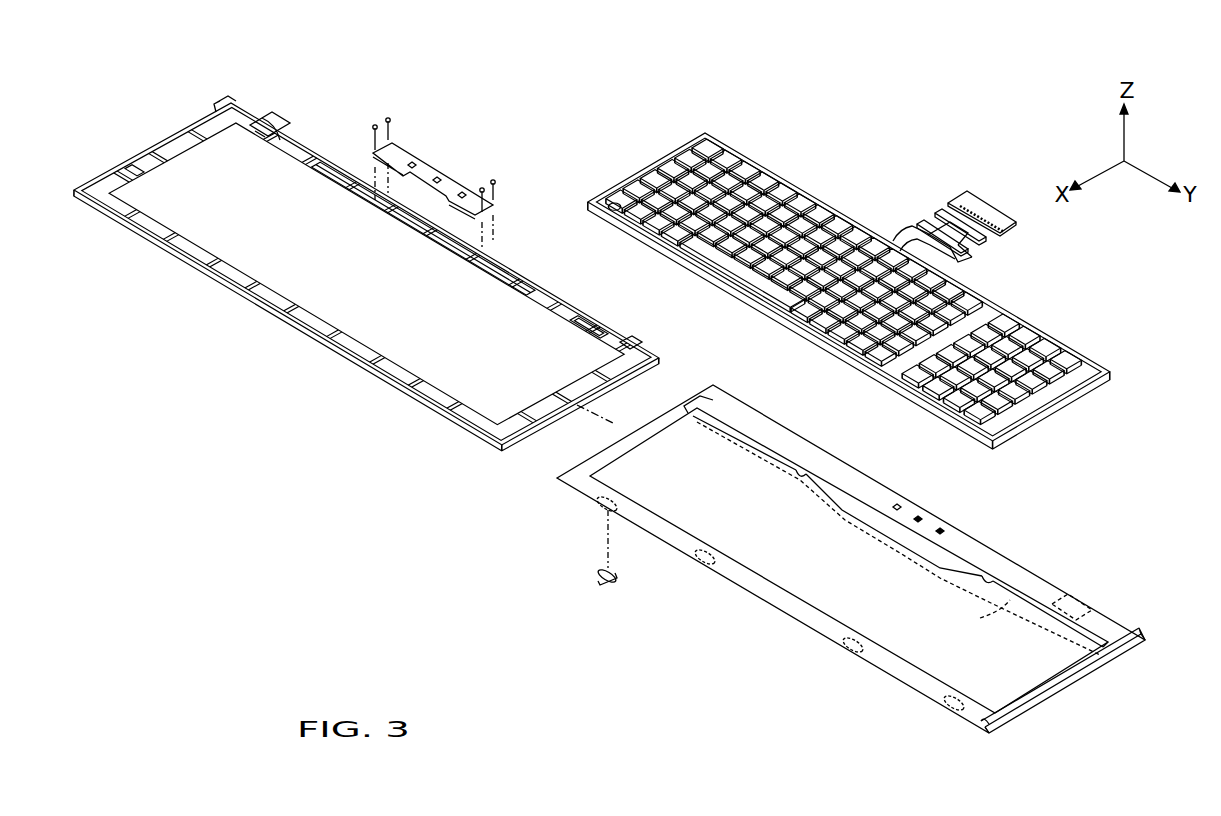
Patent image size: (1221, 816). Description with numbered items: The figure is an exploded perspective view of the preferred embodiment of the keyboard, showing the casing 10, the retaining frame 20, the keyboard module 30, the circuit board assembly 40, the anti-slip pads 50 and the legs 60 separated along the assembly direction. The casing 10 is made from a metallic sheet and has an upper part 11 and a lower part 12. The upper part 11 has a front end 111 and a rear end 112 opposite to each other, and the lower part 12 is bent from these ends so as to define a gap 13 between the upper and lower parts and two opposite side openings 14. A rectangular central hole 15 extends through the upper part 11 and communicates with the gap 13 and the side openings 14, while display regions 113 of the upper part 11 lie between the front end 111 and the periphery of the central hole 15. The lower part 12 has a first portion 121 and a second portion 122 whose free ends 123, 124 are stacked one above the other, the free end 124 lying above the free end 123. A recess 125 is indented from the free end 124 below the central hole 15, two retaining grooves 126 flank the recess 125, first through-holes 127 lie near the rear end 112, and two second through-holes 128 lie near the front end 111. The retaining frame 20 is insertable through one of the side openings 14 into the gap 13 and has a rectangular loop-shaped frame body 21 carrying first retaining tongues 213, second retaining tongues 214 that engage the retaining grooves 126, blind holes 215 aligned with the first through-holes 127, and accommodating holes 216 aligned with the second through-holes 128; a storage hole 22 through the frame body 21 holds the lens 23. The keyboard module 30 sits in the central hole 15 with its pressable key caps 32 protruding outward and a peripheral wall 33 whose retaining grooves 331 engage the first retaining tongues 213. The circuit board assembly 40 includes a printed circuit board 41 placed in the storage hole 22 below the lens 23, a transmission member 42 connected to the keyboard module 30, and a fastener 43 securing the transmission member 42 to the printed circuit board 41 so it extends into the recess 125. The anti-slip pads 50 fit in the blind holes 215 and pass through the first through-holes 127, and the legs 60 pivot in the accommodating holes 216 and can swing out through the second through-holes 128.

The casing 10 is at (841, 584).
The upper part 11 is at (864, 554).
The lower part 12 is at (1066, 708).
The gap 13 is at (1040, 606).
The side openings 14 is at (1060, 674).
The central hole 15 is at (907, 513).
The retaining frame 20 is at (366, 248).
The frame body 21 is at (232, 104).
The storage hole 22 is at (424, 228).
The lens 23 is at (462, 175).
The keyboard module 30 is at (850, 283).
The key caps 32 is at (844, 281).
The peripheral wall 33 is at (849, 291).
The circuit board assembly 40 is at (937, 196).
The printed circuit board 41 is at (990, 205).
The transmission member 42 is at (955, 257).
The fastener 43 is at (1000, 238).
The anti-slip pads 50 is at (606, 584).
The legs 60 is at (278, 130).
The front end 111 is at (1148, 636).
The rear end 112 is at (985, 732).
The display regions 113 is at (897, 503).
The first portion 121 is at (1130, 664).
The second portion 122 is at (1030, 712).
The free end 123 is at (980, 618).
The free end 124 is at (1010, 583).
The recess 125 is at (920, 545).
The retaining grooves 126 is at (800, 466).
The first through-holes 127 is at (598, 508).
The second through-holes 128 is at (1092, 608).
The first retaining tongues 213 is at (633, 335).
The second retaining tongues 214 is at (366, 273).
The blind holes 215 is at (134, 170).
The accommodating holes 216 is at (589, 327).
The retaining grooves 331 is at (849, 291).